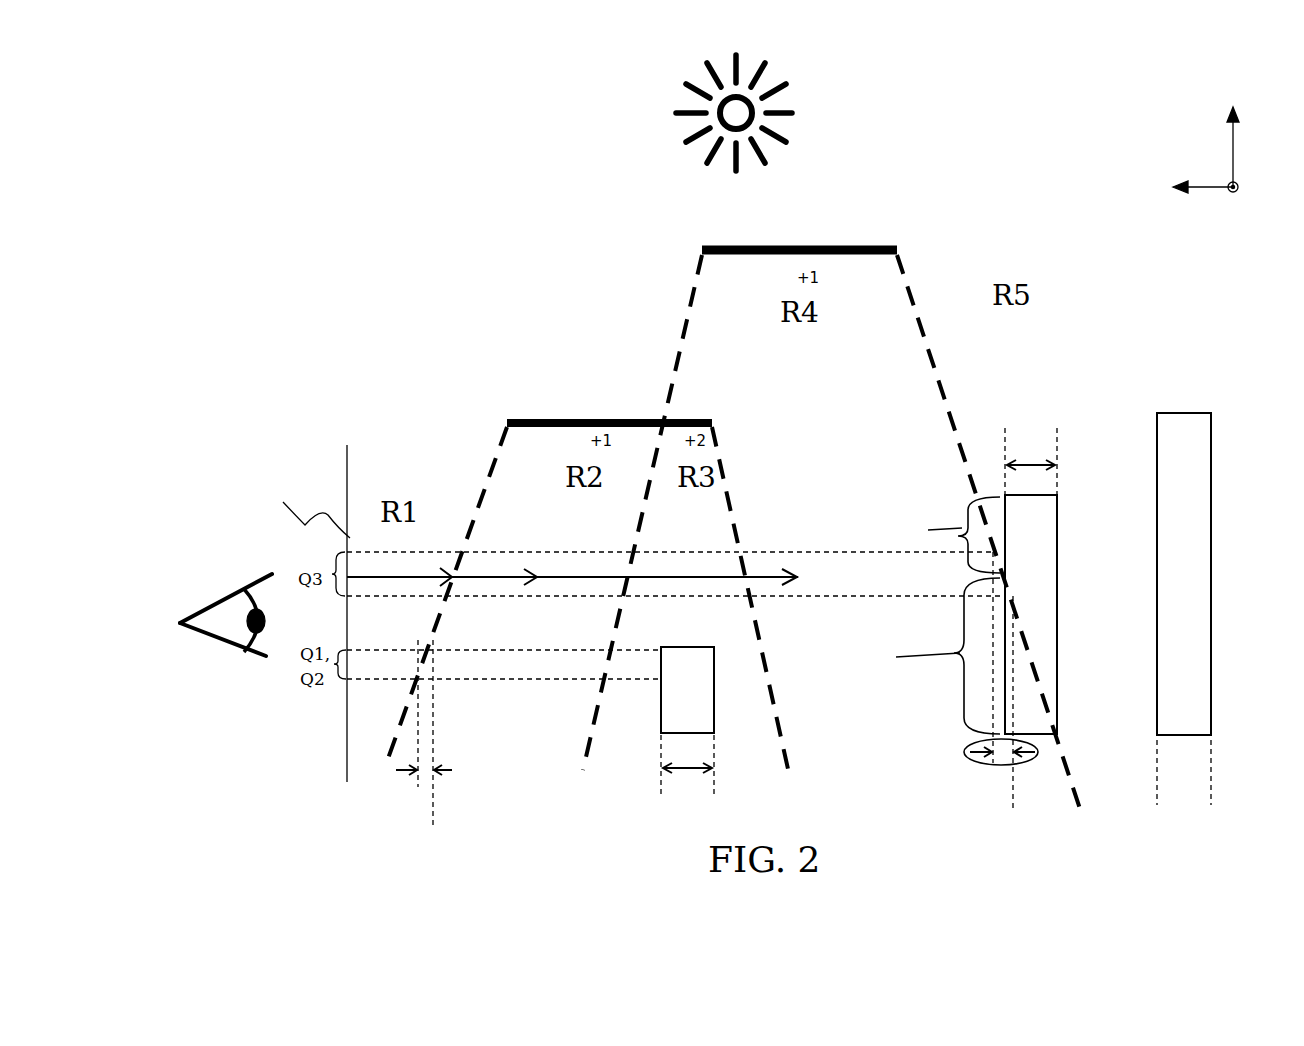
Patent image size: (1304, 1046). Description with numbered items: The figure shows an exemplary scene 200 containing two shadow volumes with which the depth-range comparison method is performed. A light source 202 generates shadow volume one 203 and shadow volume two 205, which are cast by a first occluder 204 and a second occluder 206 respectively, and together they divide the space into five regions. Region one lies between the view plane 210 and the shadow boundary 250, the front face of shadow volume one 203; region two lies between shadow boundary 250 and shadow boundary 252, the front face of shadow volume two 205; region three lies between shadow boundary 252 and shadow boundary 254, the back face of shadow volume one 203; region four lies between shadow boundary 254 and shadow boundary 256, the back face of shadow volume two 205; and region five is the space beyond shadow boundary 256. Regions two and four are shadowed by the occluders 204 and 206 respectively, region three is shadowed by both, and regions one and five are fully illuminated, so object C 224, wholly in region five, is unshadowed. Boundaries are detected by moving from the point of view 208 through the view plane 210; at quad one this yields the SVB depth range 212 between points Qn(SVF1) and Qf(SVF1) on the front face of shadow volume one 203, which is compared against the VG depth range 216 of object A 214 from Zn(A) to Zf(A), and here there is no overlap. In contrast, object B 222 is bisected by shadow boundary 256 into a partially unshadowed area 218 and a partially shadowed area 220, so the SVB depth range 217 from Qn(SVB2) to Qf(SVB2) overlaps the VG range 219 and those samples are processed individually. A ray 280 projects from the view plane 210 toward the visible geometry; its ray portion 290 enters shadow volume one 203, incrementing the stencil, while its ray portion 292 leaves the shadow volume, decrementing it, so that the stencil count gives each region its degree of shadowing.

The shadow rendering scene 200 is at (990, 82).
The light source 202 is at (758, 110).
The shadow volume one 203 is at (492, 472).
The occluder 204 is at (609, 384).
The shadow volume two 205 is at (728, 323).
The occluder 206 is at (799, 212).
The point of view 208 is at (240, 600).
The view plane 210 is at (293, 631).
The SVB depth range 212 is at (432, 775).
The object A 214 is at (658, 707).
The VG depth range 216 is at (697, 776).
The SVB depth range 217 is at (951, 697).
The partially unshadowed area 218 is at (950, 520).
The VG range 219 is at (1030, 462).
The partially shadowed area 220 is at (930, 655).
The object B 222 is at (1058, 573).
The object C 224 is at (1212, 536).
The shadow boundary 250 is at (462, 597).
The shadow boundary 252 is at (642, 512).
The shadow boundary 254 is at (757, 602).
The shadow boundary 256 is at (980, 536).
The ray 280 is at (672, 580).
The ray portion 290 is at (490, 582).
The ray portion 292 is at (762, 585).